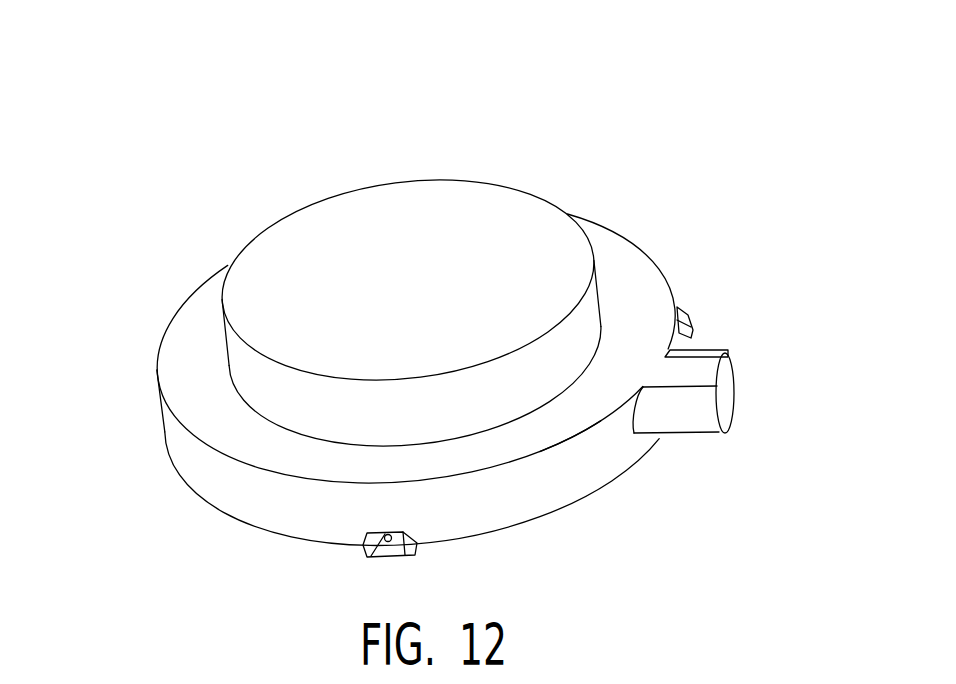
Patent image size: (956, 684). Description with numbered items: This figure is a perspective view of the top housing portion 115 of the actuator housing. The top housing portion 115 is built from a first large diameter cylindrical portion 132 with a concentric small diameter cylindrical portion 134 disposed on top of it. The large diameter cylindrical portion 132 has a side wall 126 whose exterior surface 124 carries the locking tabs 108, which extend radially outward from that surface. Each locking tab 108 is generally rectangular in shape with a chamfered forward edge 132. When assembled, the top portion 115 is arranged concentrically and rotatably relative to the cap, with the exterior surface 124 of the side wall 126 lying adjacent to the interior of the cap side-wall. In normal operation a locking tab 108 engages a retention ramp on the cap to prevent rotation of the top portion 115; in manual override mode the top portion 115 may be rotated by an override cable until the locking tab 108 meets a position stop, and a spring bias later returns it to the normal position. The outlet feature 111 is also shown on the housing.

The top housing portion 115 is at (445, 137).
The small diameter cylindrical portion 134 is at (327, 200).
The large diameter cylindrical portion 132 is at (173, 287).
The exterior surface 124 is at (175, 432).
The top portion side wall 126 is at (587, 465).
The locking tab 108 is at (688, 310).
The outlet pipe 111 is at (724, 352).